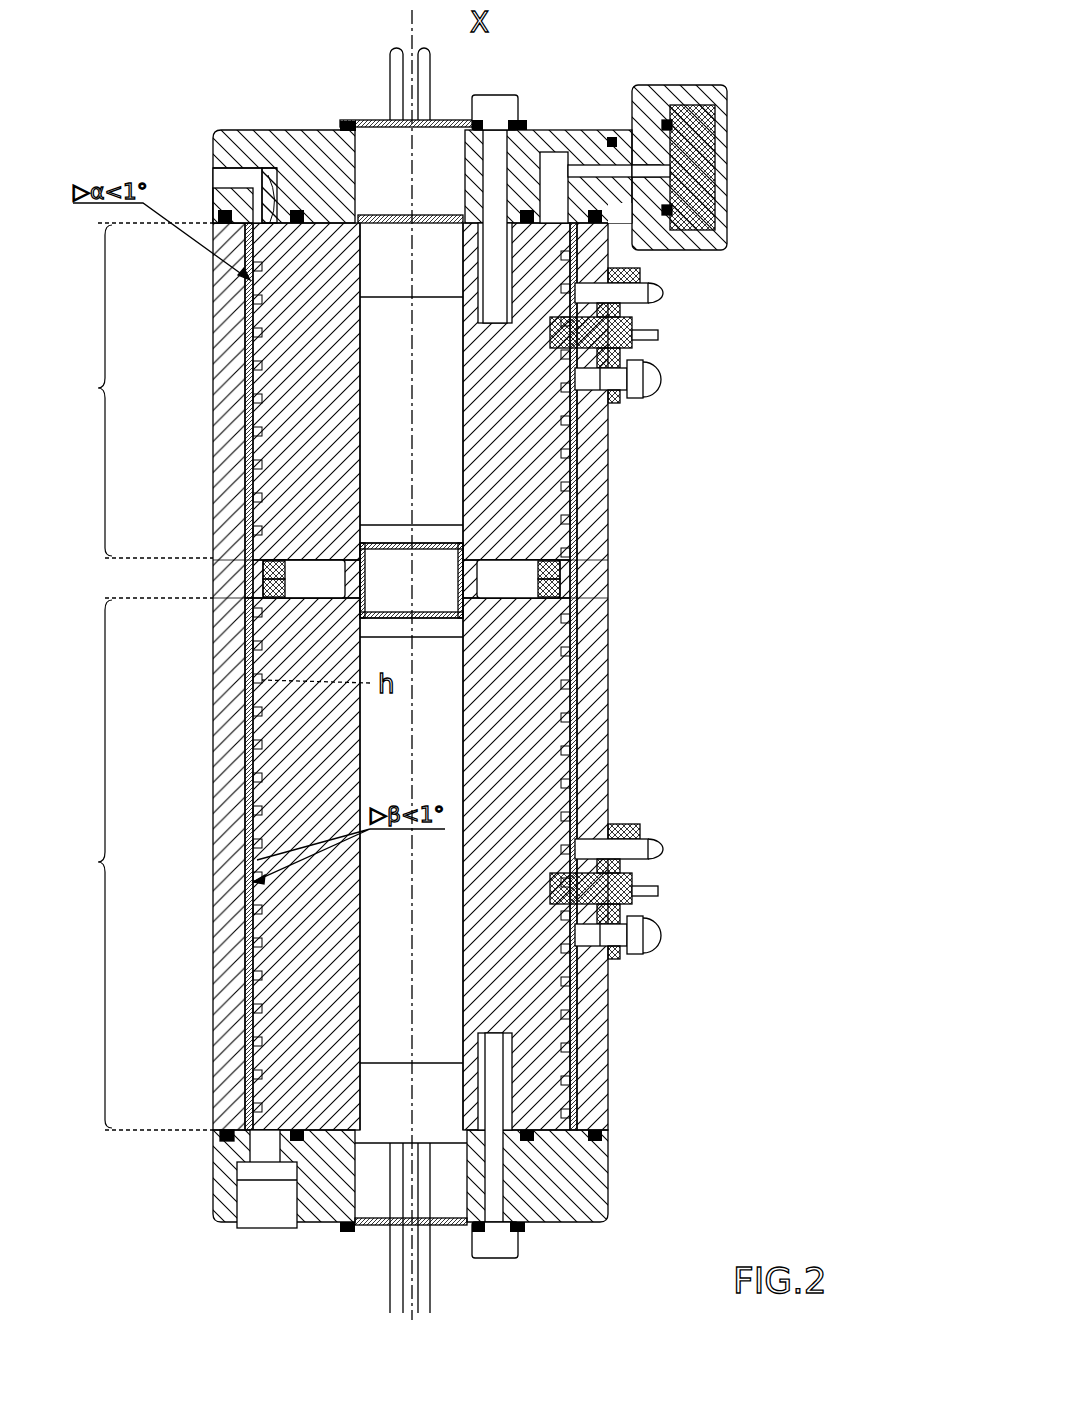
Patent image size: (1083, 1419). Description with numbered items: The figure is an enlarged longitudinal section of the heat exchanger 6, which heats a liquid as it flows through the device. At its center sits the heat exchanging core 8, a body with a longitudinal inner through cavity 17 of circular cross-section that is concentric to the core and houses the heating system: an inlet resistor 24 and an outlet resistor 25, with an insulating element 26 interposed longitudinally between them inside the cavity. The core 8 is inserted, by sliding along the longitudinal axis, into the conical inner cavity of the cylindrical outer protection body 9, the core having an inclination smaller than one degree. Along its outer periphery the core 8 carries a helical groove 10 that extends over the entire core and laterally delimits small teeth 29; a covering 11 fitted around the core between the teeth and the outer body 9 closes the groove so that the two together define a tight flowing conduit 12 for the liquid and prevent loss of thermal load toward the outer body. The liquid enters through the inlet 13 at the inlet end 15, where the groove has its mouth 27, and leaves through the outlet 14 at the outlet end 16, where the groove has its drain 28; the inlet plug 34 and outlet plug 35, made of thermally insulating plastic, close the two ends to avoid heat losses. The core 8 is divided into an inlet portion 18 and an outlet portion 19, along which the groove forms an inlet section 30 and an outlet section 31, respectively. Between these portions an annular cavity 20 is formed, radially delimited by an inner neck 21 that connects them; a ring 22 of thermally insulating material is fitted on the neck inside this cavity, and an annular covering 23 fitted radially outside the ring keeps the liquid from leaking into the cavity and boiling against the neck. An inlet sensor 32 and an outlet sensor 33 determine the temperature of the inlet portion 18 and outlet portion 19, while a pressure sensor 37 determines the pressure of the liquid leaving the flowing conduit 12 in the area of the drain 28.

The heat exchanger 6 is at (826, 112).
The heat exchanging core 8 is at (315, 465).
The outer protection body 9 is at (248, 282).
The groove 10 is at (258, 828).
The covering 11 is at (580, 735).
The flowing conduit 12 is at (600, 768).
The inlet 13 is at (256, 1226).
The outlet 14 is at (220, 185).
The inlet end 15 is at (556, 1126).
The outlet end 16 is at (340, 215).
The inner through cavity 17 is at (360, 956).
The inlet portion 18 is at (520, 700).
The outlet portion 19 is at (530, 430).
The annular cavity 20 is at (512, 590).
The inner neck 21 is at (375, 597).
The ring 22 is at (310, 572).
The annular covering 23 is at (245, 578).
The inlet resistor 24 is at (378, 990).
The outlet resistor 25 is at (450, 462).
The insulating element 26 is at (256, 682).
The mouth 27 is at (232, 1147).
The drain 28 is at (270, 225).
The small teeth 29 is at (583, 1110).
The inlet section 30 is at (135, 864).
The outlet section 31 is at (139, 390).
The inlet sensor 32 is at (610, 882).
The outlet sensor 33 is at (605, 322).
The inlet plug 34 is at (537, 1225).
The outlet plug 35 is at (540, 130).
The pressure sensor 37 is at (716, 81).